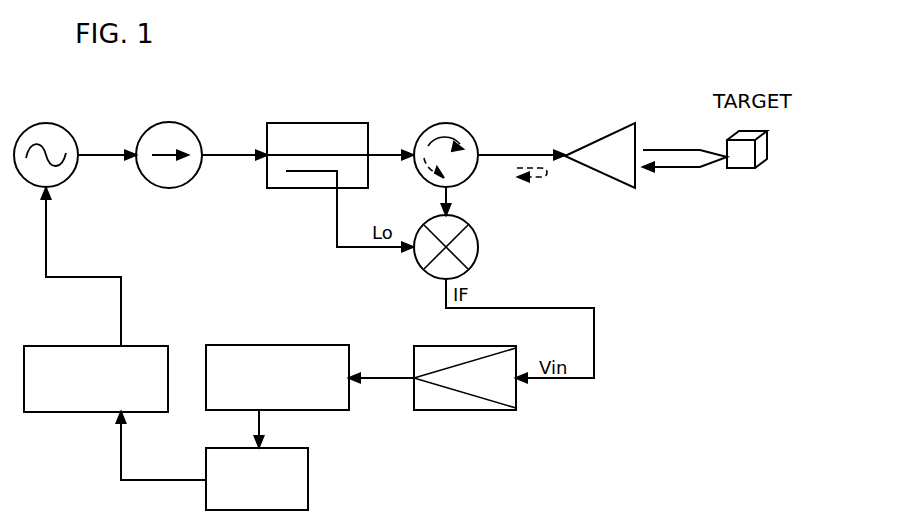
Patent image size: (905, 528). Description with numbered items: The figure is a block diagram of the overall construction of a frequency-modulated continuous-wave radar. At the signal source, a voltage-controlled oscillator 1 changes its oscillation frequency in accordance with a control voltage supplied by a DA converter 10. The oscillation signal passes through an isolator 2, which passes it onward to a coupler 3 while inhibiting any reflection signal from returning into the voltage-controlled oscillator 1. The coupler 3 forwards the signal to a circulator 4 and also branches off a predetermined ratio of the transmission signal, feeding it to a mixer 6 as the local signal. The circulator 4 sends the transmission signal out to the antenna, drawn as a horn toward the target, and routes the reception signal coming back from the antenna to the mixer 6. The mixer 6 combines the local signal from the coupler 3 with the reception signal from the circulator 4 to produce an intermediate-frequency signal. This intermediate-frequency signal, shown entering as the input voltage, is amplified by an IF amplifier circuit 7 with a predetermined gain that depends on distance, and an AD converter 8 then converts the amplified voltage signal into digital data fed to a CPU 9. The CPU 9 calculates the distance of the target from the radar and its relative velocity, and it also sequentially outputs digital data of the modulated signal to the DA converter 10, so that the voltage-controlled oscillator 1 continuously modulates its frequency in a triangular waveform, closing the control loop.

The voltage-controlled oscillator 1 is at (45, 122).
The isolator 2 is at (170, 122).
The coupler 3 is at (315, 122).
The circulator 4 is at (434, 122).
The mixer 6 is at (478, 247).
The IF amplifier circuit 7 is at (445, 346).
The AD converter 8 is at (228, 346).
The CPU 9 is at (309, 474).
The DA converter 10 is at (143, 346).